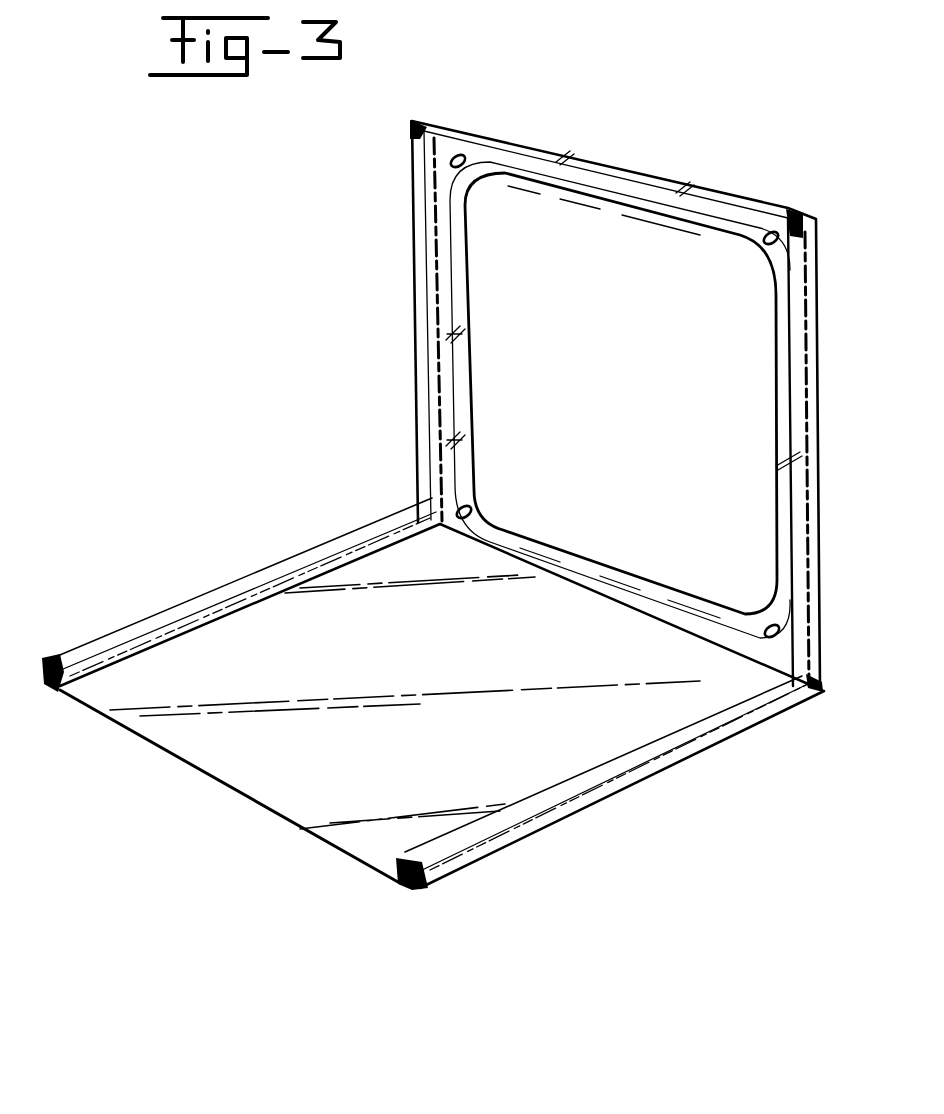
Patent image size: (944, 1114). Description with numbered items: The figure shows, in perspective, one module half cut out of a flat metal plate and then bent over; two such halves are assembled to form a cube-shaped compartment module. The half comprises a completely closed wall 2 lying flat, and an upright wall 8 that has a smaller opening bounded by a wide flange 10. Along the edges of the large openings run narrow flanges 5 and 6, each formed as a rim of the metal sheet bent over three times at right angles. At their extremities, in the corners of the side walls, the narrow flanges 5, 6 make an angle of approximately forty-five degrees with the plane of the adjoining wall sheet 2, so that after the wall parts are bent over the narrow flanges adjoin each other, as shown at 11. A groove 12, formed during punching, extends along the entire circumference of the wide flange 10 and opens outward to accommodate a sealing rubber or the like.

The completely closed wall 2 is at (267, 652).
The narrow flange 5 is at (127, 634).
The narrow flange 6 is at (557, 806).
The wall having smaller opening 8 is at (604, 588).
The wide flange 10 is at (524, 532).
The flange joint 11 is at (418, 887).
The groove 12 is at (572, 565).